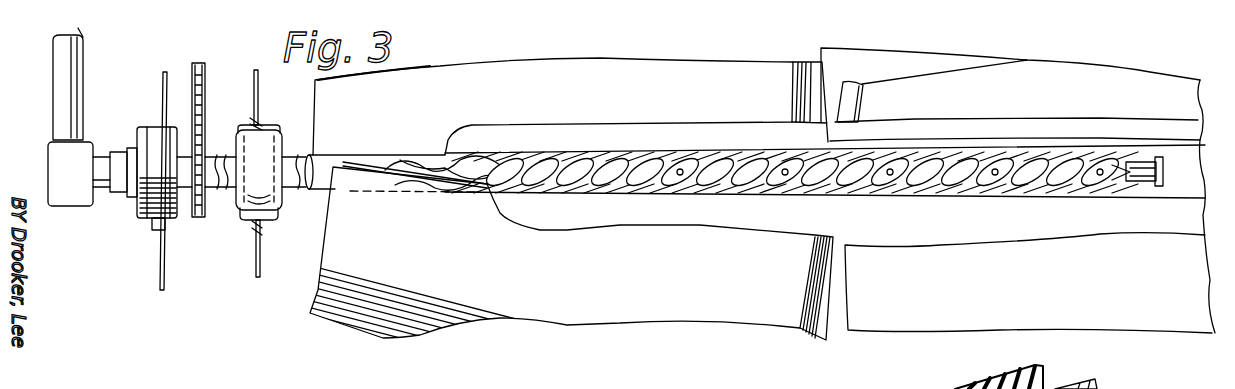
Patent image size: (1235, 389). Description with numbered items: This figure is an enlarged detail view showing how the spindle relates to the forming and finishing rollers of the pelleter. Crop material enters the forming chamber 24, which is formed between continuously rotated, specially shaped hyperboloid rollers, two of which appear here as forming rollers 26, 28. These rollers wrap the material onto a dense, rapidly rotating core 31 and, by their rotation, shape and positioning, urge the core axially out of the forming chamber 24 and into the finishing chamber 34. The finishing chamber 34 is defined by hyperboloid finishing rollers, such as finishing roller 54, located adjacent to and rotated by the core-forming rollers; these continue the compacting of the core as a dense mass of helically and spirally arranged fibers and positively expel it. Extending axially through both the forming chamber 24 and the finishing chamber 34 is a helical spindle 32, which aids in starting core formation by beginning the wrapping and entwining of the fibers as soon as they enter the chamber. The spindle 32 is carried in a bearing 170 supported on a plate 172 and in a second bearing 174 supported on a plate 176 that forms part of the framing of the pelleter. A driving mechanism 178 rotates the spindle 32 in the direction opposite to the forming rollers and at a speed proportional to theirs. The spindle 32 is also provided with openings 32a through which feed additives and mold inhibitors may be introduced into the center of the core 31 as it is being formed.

The forming chamber 24 is at (617, 152).
The forming roller 26 is at (575, 305).
The forming roller 28 is at (520, 78).
The core 31 is at (684, 153).
The helical spindle 32 is at (553, 157).
The openings 32a is at (587, 168).
The finishing chamber 34 is at (1004, 190).
The finishing roller 54 is at (1180, 128).
The bearing 170 is at (270, 147).
The plate 172 is at (252, 93).
The bearing 174 is at (146, 132).
The plate 176 is at (162, 96).
The driving mechanism 178 is at (192, 70).